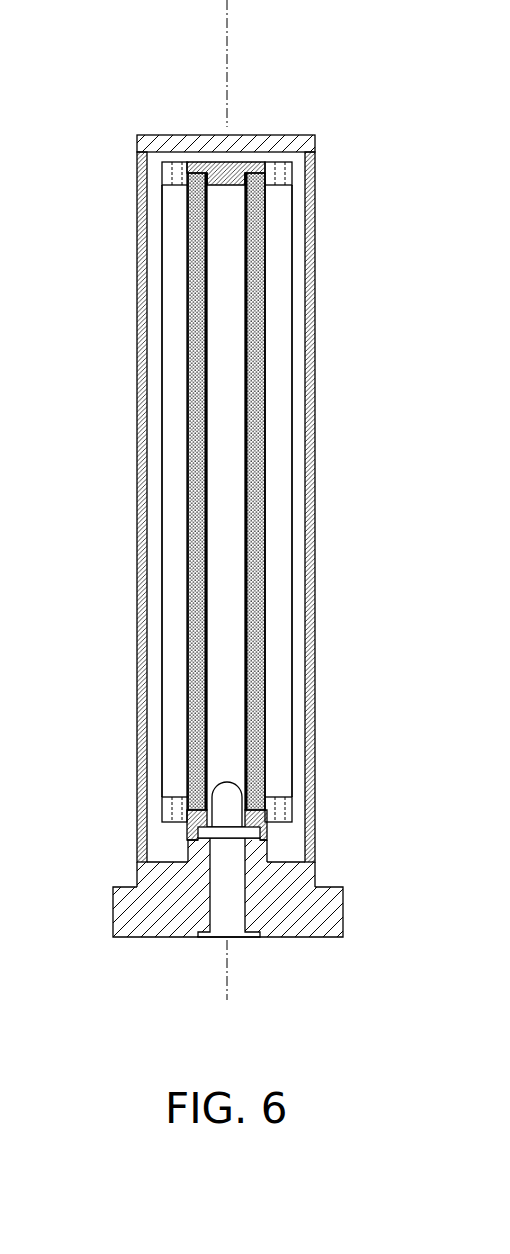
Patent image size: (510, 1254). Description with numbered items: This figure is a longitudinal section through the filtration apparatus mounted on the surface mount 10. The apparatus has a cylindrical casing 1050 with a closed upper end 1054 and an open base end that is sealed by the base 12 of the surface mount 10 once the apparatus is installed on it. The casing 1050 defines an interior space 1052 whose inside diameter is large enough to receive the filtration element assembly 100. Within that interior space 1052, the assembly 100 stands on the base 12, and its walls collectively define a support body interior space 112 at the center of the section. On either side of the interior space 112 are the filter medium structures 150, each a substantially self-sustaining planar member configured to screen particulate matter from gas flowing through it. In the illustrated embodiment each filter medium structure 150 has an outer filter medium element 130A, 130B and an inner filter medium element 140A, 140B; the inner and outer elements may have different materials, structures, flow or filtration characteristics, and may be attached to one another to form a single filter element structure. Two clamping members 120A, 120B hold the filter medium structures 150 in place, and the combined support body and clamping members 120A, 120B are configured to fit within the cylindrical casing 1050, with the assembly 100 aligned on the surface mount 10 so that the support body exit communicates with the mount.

The surface mount 10 is at (113, 898).
The base 12 is at (137, 866).
The filtration element assembly 100 is at (292, 440).
The support body interior space 112 is at (240, 499).
The clamping member 120A is at (162, 710).
The clamping member 120B is at (292, 665).
The outer filter medium element 130A is at (131, 433).
The outer filter medium element 130B is at (321, 420).
The inner filter medium element 140A is at (211, 206).
The inner filter medium element 140B is at (243, 206).
The filter medium structure 150 is at (265, 350).
The cylindrical casing 1050 is at (234, 455).
The interior space 1052 is at (157, 482).
The closed upper end 1054 is at (283, 135).